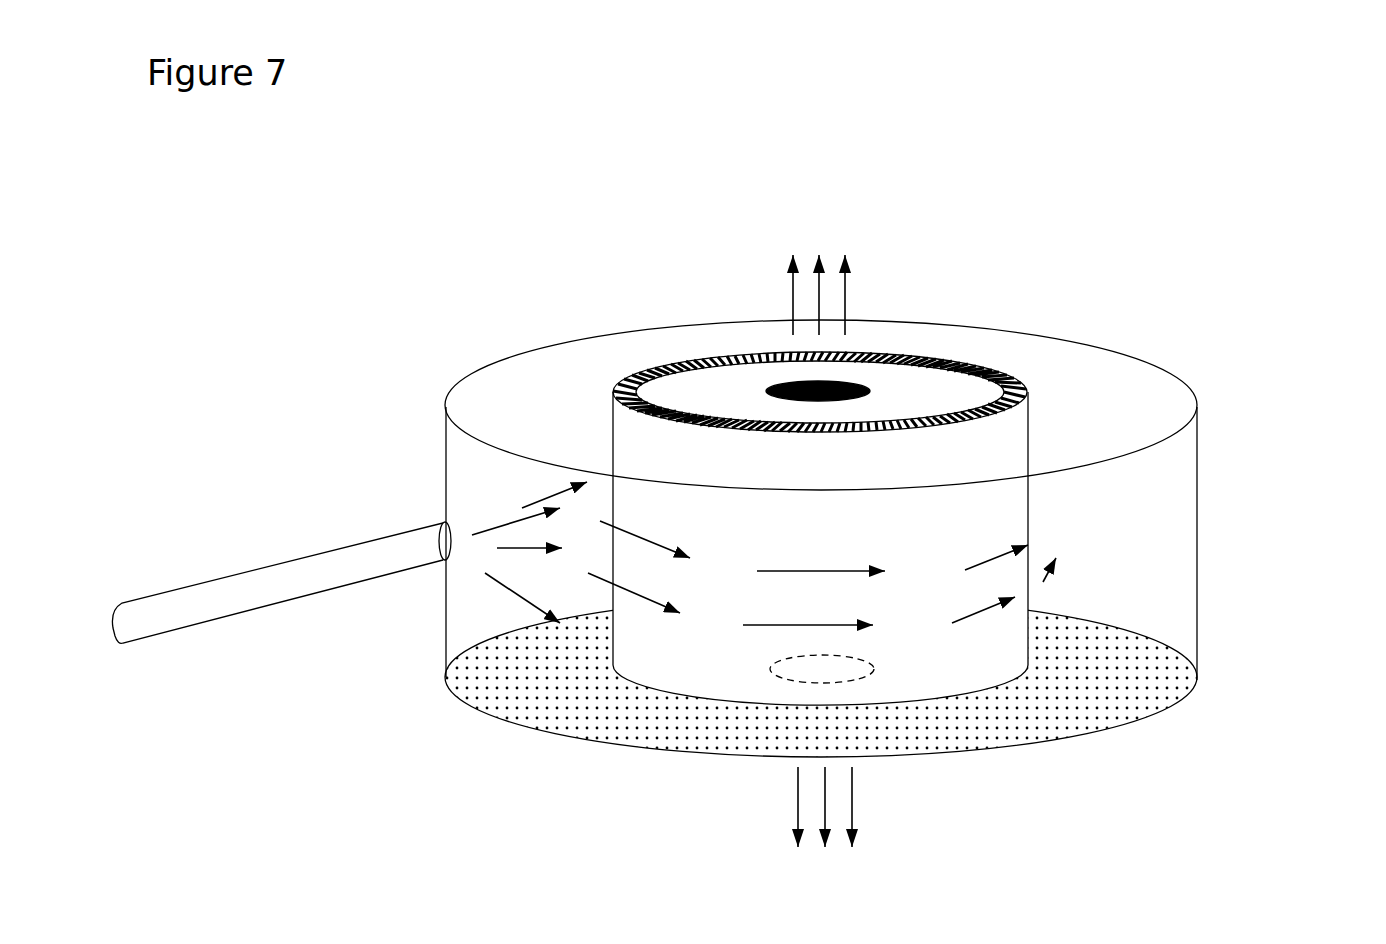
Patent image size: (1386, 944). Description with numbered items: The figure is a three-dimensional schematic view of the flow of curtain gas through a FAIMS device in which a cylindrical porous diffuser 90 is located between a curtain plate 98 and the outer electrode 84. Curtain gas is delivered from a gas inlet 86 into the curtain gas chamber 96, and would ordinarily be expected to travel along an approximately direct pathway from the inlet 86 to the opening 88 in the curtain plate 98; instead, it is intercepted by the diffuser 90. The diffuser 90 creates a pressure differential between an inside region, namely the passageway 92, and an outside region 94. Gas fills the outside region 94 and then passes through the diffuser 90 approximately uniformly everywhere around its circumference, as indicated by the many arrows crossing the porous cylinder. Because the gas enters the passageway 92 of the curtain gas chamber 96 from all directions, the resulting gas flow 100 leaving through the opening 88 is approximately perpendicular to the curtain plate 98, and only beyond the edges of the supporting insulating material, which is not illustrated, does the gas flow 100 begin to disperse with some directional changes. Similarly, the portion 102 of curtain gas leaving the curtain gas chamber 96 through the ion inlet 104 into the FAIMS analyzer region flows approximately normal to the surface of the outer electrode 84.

The outer electrode 84 is at (1080, 677).
The gas inlet 86 is at (440, 527).
The opening 88 is at (800, 382).
The cylindrical porous diffuser 90 is at (1015, 378).
The passageway 92 is at (910, 400).
The outside region 94 is at (1092, 423).
The curtain gas chamber 96 is at (1120, 543).
The curtain plate 98 is at (1157, 385).
The gas flow 100 is at (783, 287).
The portion of curtain gas 102 is at (783, 802).
The ion inlet 104 is at (775, 678).